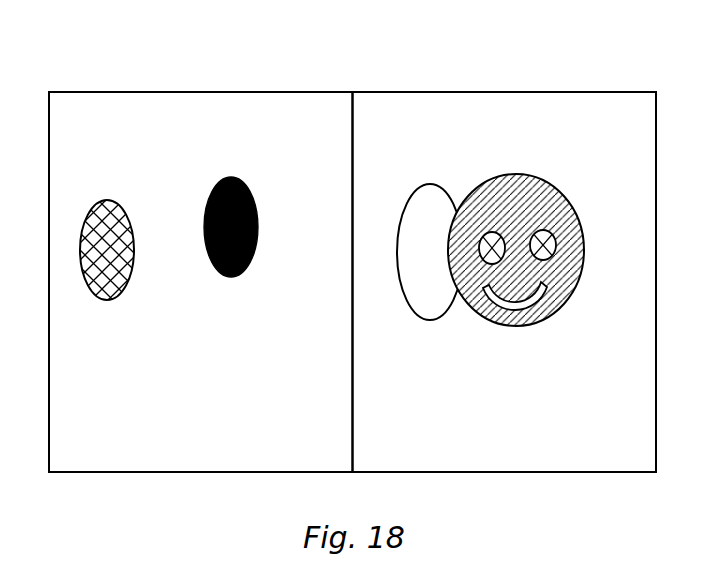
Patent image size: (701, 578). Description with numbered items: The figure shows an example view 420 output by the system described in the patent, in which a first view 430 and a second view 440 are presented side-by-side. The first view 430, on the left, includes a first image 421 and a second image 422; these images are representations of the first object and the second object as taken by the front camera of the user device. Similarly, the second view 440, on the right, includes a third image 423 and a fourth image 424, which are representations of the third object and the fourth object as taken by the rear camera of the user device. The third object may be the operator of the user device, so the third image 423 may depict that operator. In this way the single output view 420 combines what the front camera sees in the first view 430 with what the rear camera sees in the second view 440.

The view 420 is at (590, 497).
The first view 430 is at (193, 69).
The second view 440 is at (508, 69).
The first image 421 is at (112, 300).
The second image 422 is at (240, 273).
The third image 423 is at (540, 322).
The fourth image 424 is at (433, 321).